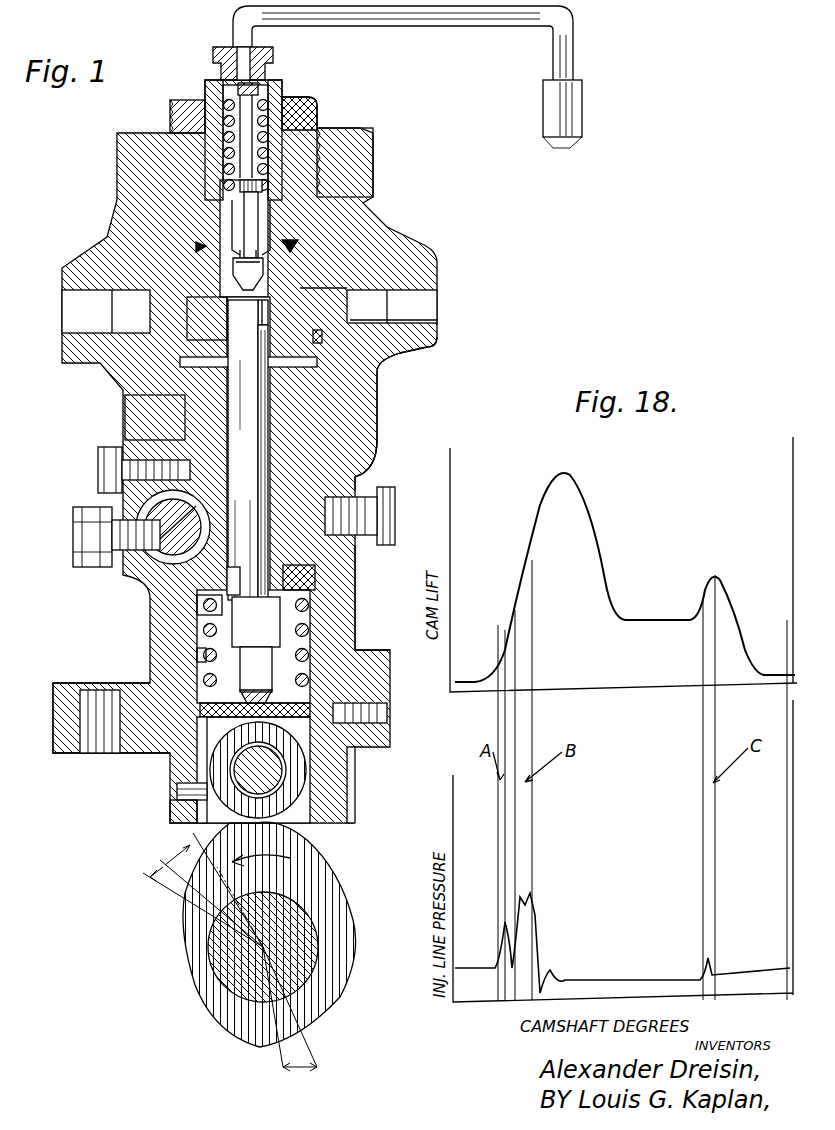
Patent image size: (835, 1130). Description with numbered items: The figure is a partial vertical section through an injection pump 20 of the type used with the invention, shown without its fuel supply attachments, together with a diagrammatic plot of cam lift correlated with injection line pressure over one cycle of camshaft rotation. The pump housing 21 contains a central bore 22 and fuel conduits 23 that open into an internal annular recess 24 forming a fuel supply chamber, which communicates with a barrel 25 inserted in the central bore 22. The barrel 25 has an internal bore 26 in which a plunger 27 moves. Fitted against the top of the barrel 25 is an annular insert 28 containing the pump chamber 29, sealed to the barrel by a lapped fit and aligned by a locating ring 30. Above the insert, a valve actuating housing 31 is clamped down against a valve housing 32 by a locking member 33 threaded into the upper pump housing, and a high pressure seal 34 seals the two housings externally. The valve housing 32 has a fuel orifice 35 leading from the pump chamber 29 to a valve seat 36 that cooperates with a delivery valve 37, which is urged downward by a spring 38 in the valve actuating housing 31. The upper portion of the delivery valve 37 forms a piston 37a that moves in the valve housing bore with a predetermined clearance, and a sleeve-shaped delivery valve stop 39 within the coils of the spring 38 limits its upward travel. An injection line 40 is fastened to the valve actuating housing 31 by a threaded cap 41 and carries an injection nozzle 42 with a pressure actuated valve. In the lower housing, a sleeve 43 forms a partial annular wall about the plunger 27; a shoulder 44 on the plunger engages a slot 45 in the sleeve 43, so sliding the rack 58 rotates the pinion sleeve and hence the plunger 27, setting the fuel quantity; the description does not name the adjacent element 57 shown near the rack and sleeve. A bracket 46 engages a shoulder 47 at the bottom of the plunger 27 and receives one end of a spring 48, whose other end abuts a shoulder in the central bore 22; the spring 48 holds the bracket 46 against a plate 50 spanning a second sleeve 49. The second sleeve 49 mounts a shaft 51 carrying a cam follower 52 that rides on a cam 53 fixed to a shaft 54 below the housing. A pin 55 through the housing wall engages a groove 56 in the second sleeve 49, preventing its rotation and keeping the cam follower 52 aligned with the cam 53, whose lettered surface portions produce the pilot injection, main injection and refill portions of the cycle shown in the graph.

The injection pump 20 is at (408, 426).
The pump housing 21 is at (352, 468).
The central bore 22 is at (330, 570).
The fuel conduits 23 is at (75, 330).
The internal annular recess 24 is at (350, 370).
The barrel 25 is at (183, 403).
The internal bore 26 is at (362, 448).
The plunger 27 is at (240, 452).
The annular insert 28 is at (437, 318).
The pump chamber 29 is at (270, 315).
The locating ring 30 is at (322, 337).
The valve actuating housing 31 is at (276, 88).
The valve housing 32 is at (333, 290).
The locking member 33 is at (310, 97).
The high pressure seal 34 is at (275, 232).
The fuel orifice 35 is at (187, 302).
The valve seat 36 is at (233, 257).
The delivery valve 37 is at (262, 215).
The piston 37a is at (265, 186).
The spring 38 is at (225, 120).
The delivery valve stop 39 is at (240, 95).
The injection line 40 is at (438, 24).
The cap 41 is at (213, 50).
The injection nozzle 42 is at (582, 112).
The sleeve 43 is at (318, 567).
The shoulder 44 is at (197, 615).
The slot 45 is at (227, 587).
The bracket 46 is at (153, 673).
The shoulder 47 is at (217, 722).
The spring 48 is at (203, 657).
The second sleeve 49 is at (313, 632).
The plate 50 is at (320, 700).
The shaft 51 is at (283, 768).
The cam follower 52 is at (283, 793).
The cam 53 is at (340, 920).
The shaft 54 is at (243, 952).
The pin 55 is at (177, 800).
The groove 56 is at (200, 763).
The plug bolt 57 is at (83, 527).
The rack 58 is at (170, 543).